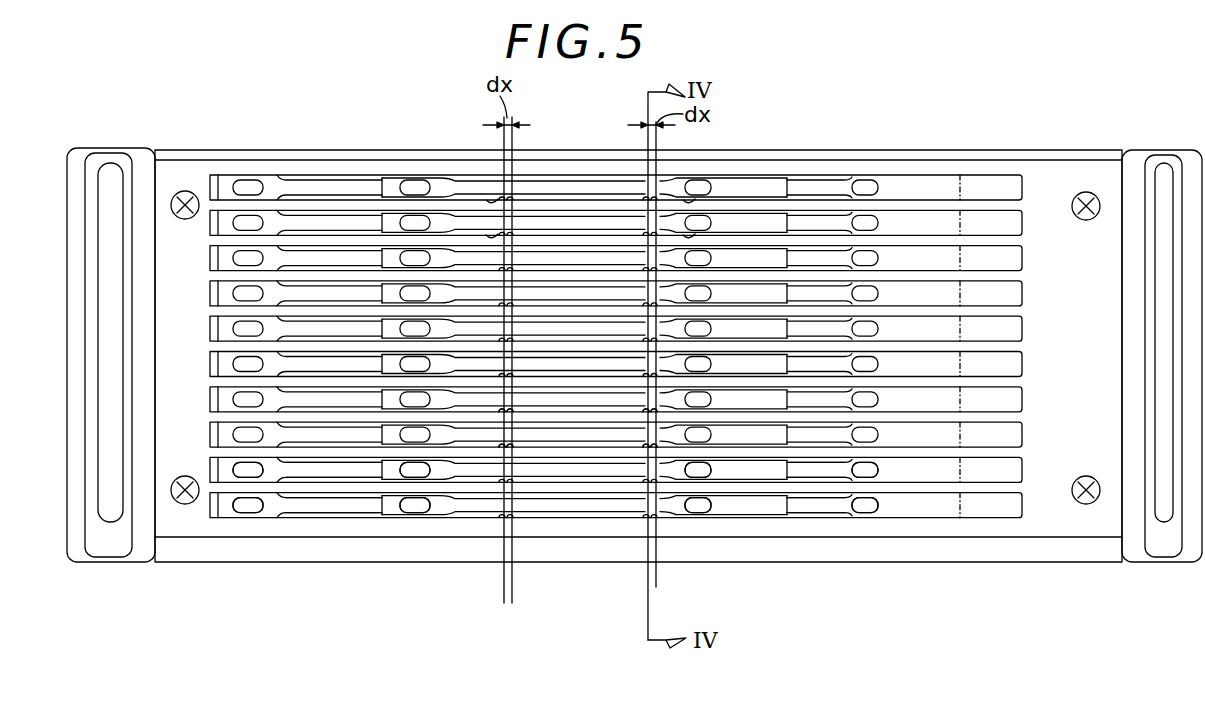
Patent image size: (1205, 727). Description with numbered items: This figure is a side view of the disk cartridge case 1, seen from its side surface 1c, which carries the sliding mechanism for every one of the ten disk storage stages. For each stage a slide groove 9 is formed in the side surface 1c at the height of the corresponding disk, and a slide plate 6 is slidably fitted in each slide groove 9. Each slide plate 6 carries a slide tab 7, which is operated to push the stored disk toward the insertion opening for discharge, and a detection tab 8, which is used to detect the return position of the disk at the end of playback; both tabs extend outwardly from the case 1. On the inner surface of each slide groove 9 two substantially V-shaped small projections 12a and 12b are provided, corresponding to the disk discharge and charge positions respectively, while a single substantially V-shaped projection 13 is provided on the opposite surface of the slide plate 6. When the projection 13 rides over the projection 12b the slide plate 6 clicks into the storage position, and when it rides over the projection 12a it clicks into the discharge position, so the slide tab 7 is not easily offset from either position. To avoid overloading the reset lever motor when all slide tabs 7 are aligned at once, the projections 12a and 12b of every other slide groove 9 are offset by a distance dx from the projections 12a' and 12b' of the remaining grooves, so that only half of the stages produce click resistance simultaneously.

The case 1 is at (193, 563).
The side surface 1c is at (182, 520).
The slide plate 6 is at (353, 510).
The slide tab 7 is at (253, 510).
The detection tab 8 is at (704, 511).
The slide groove 9 is at (909, 215).
The projection 12a is at (618, 518).
The projection 12a' is at (690, 509).
The projection 12b is at (473, 520).
The projection 12b' is at (544, 511).
The projection 13 is at (488, 236).